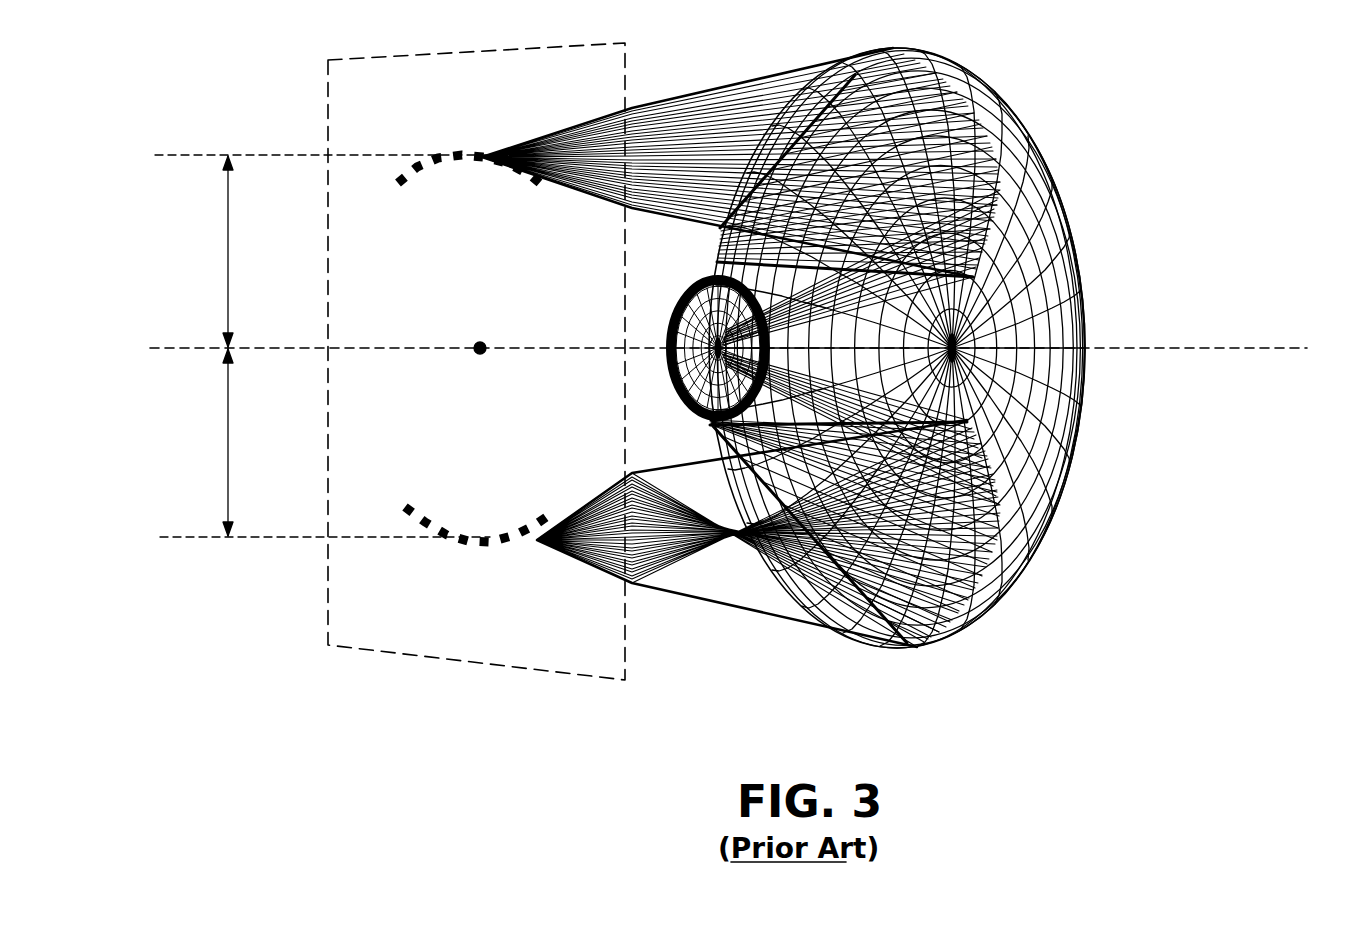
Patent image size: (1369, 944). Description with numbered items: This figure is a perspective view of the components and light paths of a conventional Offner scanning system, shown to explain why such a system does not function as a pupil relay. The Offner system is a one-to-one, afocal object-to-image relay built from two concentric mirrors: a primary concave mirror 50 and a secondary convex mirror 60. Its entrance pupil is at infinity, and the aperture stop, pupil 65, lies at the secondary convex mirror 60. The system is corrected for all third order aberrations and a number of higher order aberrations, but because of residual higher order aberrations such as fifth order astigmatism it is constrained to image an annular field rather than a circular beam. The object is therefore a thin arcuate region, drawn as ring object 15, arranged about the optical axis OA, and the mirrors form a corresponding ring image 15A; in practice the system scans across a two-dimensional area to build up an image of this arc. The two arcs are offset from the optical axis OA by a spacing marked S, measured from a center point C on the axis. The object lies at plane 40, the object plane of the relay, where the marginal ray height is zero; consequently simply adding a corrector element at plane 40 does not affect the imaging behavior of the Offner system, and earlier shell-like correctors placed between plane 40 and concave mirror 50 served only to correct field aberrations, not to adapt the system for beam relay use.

The ring object 15 is at (455, 163).
The ring image 15A is at (415, 498).
The plane 40 is at (328, 72).
The primary concave mirror 50 is at (1017, 113).
The secondary convex mirror 60 is at (687, 330).
The pupil 65 is at (688, 372).
The source spacing S is at (322, 346).
The center point C is at (463, 359).
The optical axis OA is at (1205, 348).